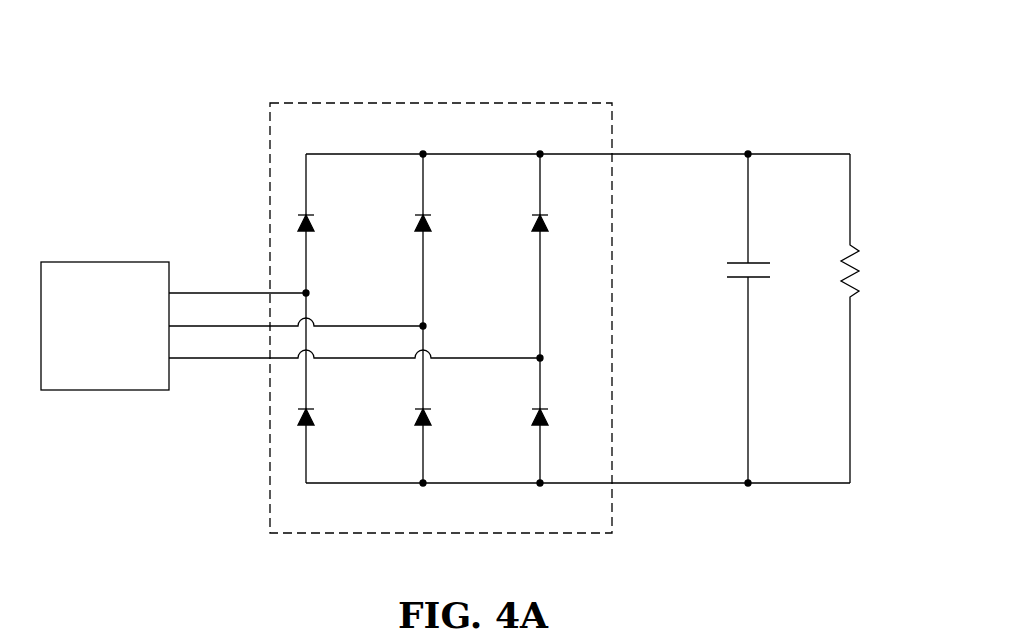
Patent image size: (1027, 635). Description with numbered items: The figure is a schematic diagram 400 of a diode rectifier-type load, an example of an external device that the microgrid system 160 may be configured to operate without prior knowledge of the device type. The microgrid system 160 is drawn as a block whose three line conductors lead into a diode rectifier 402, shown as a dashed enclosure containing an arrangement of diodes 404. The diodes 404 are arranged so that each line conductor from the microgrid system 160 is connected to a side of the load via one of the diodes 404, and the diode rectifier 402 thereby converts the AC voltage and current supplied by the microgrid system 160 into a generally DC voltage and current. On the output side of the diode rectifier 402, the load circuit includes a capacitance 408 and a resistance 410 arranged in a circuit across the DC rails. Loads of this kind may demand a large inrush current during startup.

The schematic diagram 400 is at (755, 65).
The microgrid system 160 is at (108, 262).
The diode rectifier 402 is at (555, 103).
The diodes 404 is at (418, 216).
The capacitance 408 is at (740, 281).
The resistance 410 is at (852, 246).